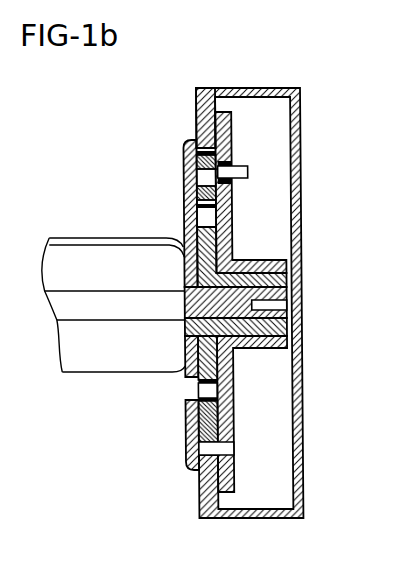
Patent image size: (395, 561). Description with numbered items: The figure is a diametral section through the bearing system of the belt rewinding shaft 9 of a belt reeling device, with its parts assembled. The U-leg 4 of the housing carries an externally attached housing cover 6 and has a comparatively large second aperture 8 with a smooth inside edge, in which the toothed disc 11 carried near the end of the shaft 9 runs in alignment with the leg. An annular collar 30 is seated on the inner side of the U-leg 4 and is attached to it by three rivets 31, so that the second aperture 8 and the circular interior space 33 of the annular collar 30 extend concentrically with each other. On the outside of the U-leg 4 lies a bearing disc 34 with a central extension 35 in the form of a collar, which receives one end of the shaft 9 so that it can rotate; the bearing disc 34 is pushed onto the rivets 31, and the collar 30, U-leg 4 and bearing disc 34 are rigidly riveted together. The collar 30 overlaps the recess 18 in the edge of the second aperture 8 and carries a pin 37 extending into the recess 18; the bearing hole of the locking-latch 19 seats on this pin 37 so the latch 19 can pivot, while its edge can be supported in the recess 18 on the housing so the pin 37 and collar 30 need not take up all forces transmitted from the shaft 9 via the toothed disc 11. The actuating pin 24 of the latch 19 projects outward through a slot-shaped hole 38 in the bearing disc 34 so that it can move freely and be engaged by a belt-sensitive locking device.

The U-leg 4 is at (200, 108).
The recess 18 is at (208, 145).
The locking-latch 19 is at (202, 163).
The pin 37 is at (203, 178).
The annular collar 30 is at (188, 186).
The toothed disc 11 is at (203, 240).
The housing cover 6 is at (298, 125).
The pin 24 is at (247, 171).
The hole 38 is at (235, 184).
The central extension 35 is at (278, 268).
The belt rewinding shaft 9 is at (240, 297).
The circular interior space 33 is at (203, 391).
The second aperture 8 is at (203, 396).
The bearing disc 34 is at (232, 424).
The rivets 31 is at (208, 449).